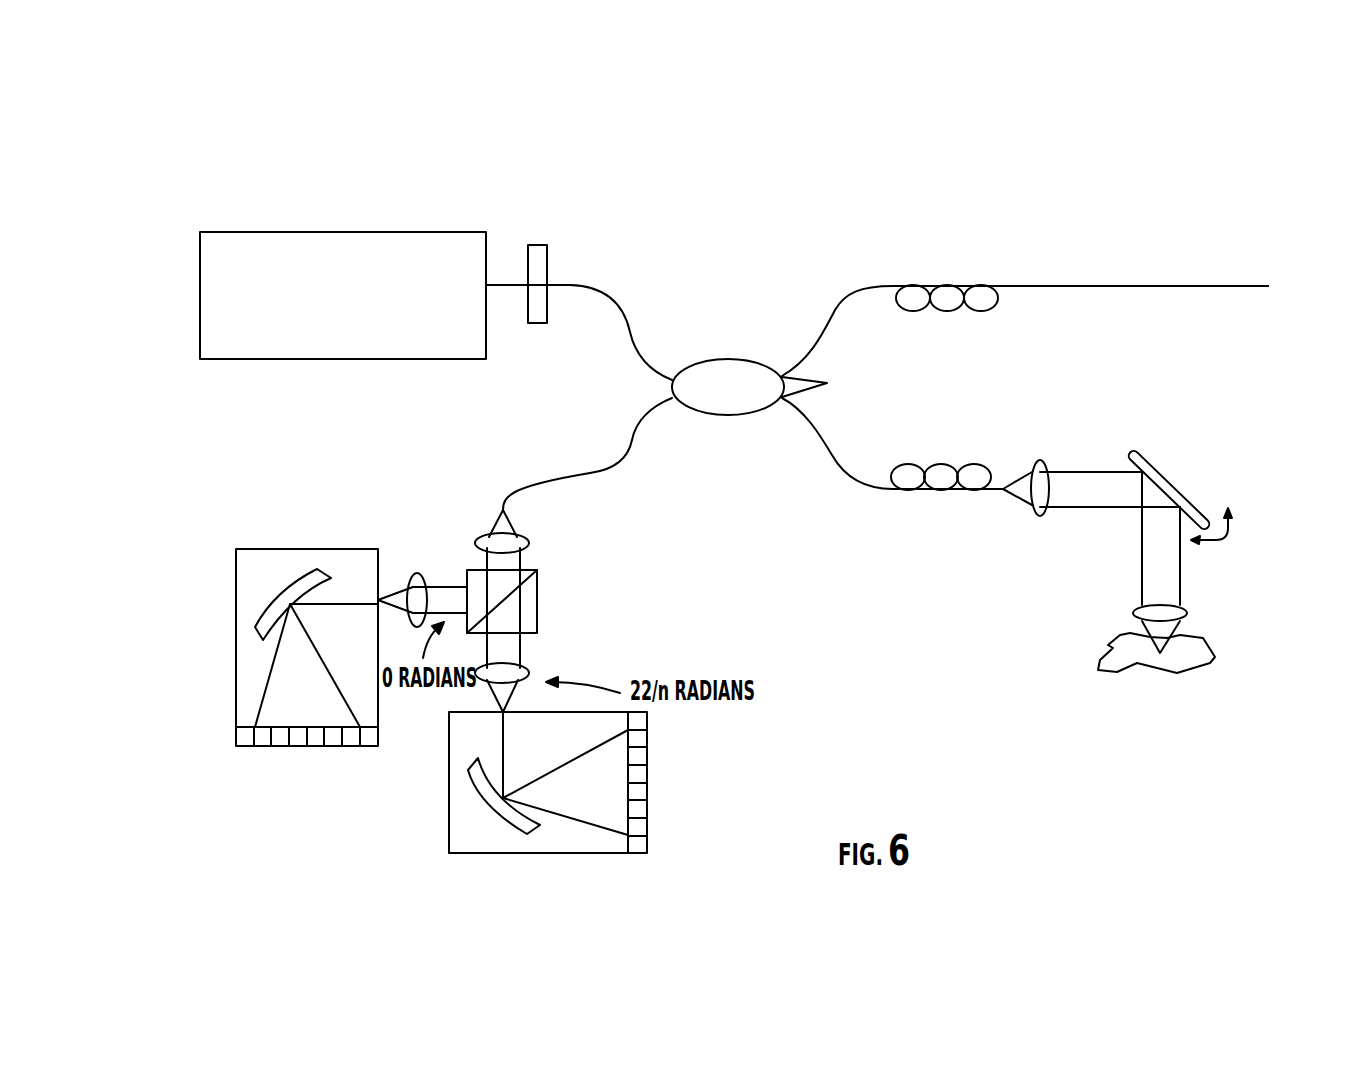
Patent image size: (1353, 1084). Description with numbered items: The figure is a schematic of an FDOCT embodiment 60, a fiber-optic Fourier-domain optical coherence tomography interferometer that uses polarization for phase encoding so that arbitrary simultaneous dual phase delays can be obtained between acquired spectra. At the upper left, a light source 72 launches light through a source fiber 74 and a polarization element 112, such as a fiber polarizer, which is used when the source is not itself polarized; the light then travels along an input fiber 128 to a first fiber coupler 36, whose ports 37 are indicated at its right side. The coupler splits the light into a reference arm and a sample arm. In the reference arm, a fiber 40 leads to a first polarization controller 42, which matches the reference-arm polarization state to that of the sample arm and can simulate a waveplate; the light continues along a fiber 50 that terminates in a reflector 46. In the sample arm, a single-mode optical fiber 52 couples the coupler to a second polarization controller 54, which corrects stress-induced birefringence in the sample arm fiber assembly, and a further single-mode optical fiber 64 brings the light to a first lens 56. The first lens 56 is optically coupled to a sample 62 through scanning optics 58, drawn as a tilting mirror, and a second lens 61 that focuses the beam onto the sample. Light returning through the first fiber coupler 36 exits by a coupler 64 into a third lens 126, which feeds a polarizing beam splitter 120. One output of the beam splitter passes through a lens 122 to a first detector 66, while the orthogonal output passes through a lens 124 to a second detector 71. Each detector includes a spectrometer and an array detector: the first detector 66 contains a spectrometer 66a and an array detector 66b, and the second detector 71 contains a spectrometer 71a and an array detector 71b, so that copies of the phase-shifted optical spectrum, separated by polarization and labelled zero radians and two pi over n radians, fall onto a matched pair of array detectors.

The FDOCT embodiment 60 is at (138, 164).
The light source 72 is at (223, 232).
The source fiber 74 is at (497, 283).
The polarization element 112 is at (548, 262).
The input fiber 128 is at (600, 293).
The first fiber coupler 36 is at (727, 359).
The coupler ports 37 is at (827, 383).
The reference arm fiber 40 is at (845, 300).
The first polarization controller 42 is at (940, 286).
The reference fiber 50 is at (1092, 286).
The reflector 46 is at (1268, 286).
The SM optical fiber 52 is at (832, 455).
The second polarization controller 54 is at (947, 491).
The SM optical fiber 64 is at (637, 417).
The first lens 56 is at (1037, 460).
The scanning optics 58 is at (1152, 462).
The second lens 61 is at (1180, 607).
The sample 62 is at (1202, 638).
The second detector 71 is at (270, 549).
The spectrometer 71a is at (287, 597).
The array detector 71b is at (280, 738).
The lens 124 is at (417, 577).
The third lens 126 is at (530, 542).
The polarizing beam splitter 120 is at (537, 610).
The lens 122 is at (528, 667).
The first detector 66 is at (578, 795).
The spectrometer 66a is at (500, 803).
The array detector 66b is at (647, 817).